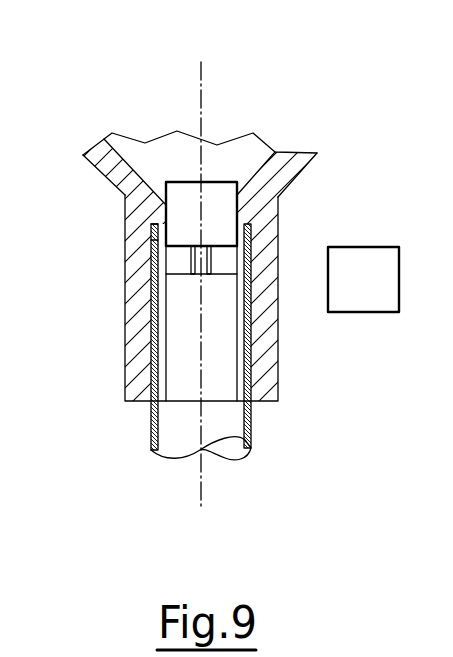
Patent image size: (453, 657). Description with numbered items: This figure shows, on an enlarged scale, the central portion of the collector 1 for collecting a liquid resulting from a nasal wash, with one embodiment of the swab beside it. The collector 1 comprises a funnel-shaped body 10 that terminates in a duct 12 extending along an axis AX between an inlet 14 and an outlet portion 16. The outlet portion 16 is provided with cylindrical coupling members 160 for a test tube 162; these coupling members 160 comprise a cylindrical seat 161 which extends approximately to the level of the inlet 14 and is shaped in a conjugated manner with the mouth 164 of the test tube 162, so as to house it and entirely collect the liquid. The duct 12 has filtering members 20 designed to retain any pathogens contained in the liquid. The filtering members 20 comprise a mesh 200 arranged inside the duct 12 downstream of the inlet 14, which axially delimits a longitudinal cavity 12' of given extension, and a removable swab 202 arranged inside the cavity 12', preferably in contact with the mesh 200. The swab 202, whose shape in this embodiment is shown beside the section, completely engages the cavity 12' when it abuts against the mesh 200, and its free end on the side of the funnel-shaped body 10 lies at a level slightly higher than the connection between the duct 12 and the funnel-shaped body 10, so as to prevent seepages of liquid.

The collector 1 is at (291, 66).
The axis AX is at (197, 71).
The funnel-shaped body 10 is at (305, 168).
The duct 12 is at (236, 290).
The longitudinal cavity 12' is at (187, 237).
The inlet 14 is at (247, 186).
The outlet portion 16 is at (209, 368).
The filtering members 20 is at (132, 215).
The cylindrical coupling members 160 is at (261, 265).
The cylindrical seat 161 is at (176, 308).
The test tube 162 is at (170, 419).
The mouth 164 is at (153, 240).
The mesh 200 is at (178, 263).
The swab 202 is at (218, 197).